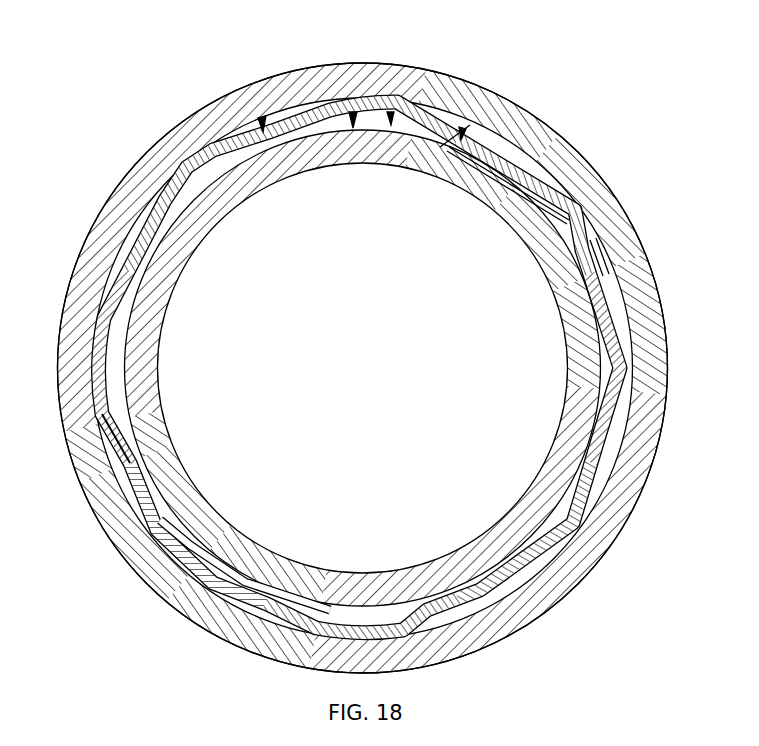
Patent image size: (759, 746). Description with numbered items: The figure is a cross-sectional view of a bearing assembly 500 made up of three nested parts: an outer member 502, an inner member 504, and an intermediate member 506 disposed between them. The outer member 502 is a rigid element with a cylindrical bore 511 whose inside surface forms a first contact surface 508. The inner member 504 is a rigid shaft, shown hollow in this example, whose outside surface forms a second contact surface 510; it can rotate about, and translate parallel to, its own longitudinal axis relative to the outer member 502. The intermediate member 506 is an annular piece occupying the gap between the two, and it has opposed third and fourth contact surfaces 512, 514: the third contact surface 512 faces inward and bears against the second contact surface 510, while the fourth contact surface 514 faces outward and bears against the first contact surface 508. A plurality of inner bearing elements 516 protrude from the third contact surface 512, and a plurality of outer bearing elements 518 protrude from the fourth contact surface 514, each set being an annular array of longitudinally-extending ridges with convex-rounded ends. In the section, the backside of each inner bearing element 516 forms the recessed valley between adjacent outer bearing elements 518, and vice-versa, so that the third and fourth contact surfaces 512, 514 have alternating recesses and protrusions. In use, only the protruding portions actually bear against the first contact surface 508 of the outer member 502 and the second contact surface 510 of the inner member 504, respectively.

The bearing assembly 500 is at (558, 92).
The outer member 502 is at (231, 106).
The inner member 504 is at (517, 223).
The intermediate member 506 is at (183, 173).
The first contact surface 508 is at (460, 130).
The second contact surface 510 is at (393, 102).
The bore 511 is at (597, 245).
The third contact surface 512 is at (350, 113).
The fourth contact surface 514 is at (260, 120).
The inner bearing elements 516 is at (137, 458).
The outer bearing elements 518 is at (170, 562).